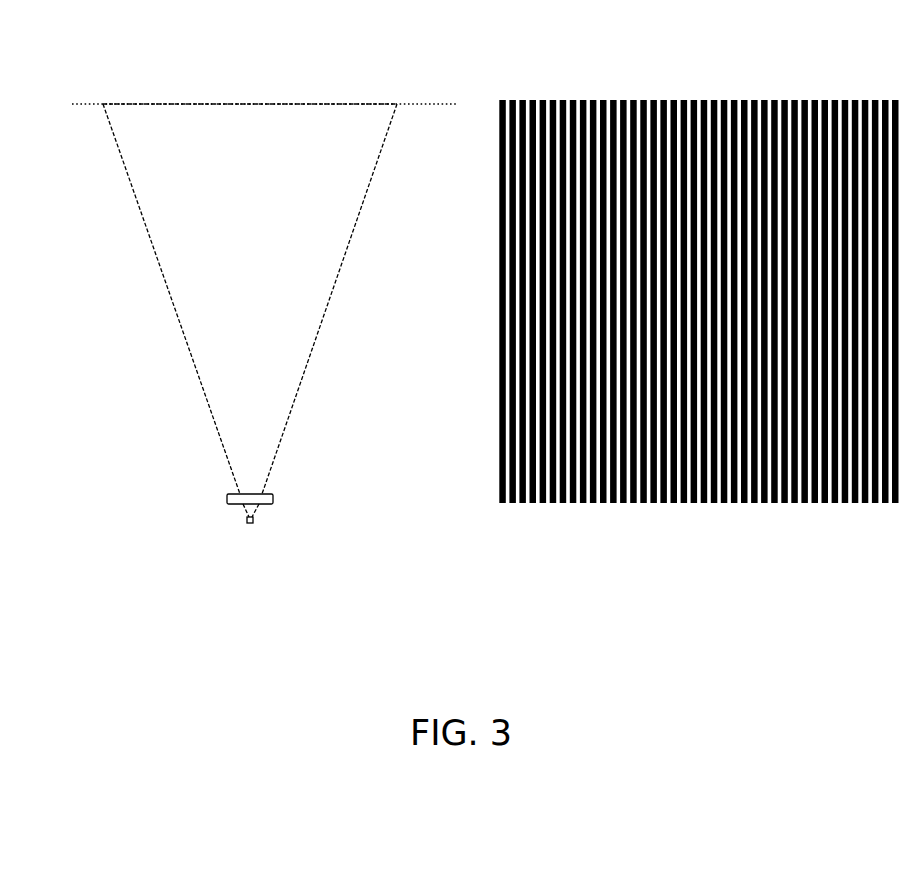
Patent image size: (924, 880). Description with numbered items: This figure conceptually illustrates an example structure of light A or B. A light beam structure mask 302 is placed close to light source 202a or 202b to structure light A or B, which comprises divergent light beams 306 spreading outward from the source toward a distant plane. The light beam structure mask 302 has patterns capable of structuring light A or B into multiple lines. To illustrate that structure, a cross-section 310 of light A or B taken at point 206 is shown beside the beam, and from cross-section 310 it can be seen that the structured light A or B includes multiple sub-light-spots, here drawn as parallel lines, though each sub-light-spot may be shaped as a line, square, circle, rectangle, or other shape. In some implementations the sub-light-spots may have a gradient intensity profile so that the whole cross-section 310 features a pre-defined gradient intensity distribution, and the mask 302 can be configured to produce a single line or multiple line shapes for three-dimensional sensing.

The point 206 is at (250, 104).
The divergent light beams 306 is at (263, 287).
The light beam structure mask 302 is at (227, 495).
The light source 202a is at (222, 553).
The light source 202b is at (246, 521).
The cross-section 310 is at (672, 511).
The light A is at (145, 225).